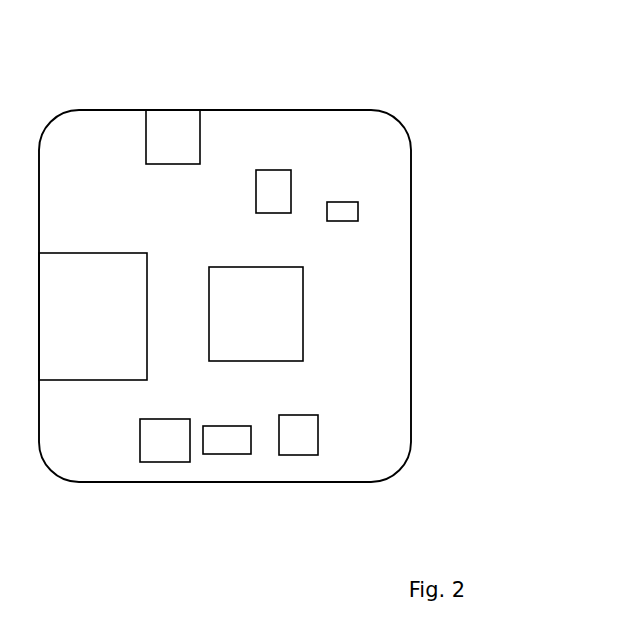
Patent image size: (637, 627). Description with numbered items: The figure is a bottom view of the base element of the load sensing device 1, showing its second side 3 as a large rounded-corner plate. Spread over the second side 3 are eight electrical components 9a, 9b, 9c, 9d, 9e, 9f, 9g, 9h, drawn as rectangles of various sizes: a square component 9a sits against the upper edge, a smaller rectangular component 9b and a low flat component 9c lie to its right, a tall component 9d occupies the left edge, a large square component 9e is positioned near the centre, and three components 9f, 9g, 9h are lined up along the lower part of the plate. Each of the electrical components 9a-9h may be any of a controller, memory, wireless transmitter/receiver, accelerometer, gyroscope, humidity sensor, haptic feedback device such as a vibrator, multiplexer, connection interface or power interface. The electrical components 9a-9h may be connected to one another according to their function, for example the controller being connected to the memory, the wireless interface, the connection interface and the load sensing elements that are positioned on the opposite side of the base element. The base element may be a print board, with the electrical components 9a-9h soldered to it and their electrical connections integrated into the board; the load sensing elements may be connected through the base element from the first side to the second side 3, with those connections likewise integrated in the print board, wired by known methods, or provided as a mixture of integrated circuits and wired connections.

The load sensing device 1 is at (452, 85).
The second side 3 is at (114, 147).
The electrical component 9a is at (160, 151).
The electrical component 9b is at (271, 182).
The electrical component 9c is at (345, 202).
The electrical component 9d is at (73, 323).
The electrical component 9e is at (241, 320).
The electrical component 9f is at (153, 453).
The electrical component 9g is at (228, 440).
The electrical component 9h is at (302, 442).